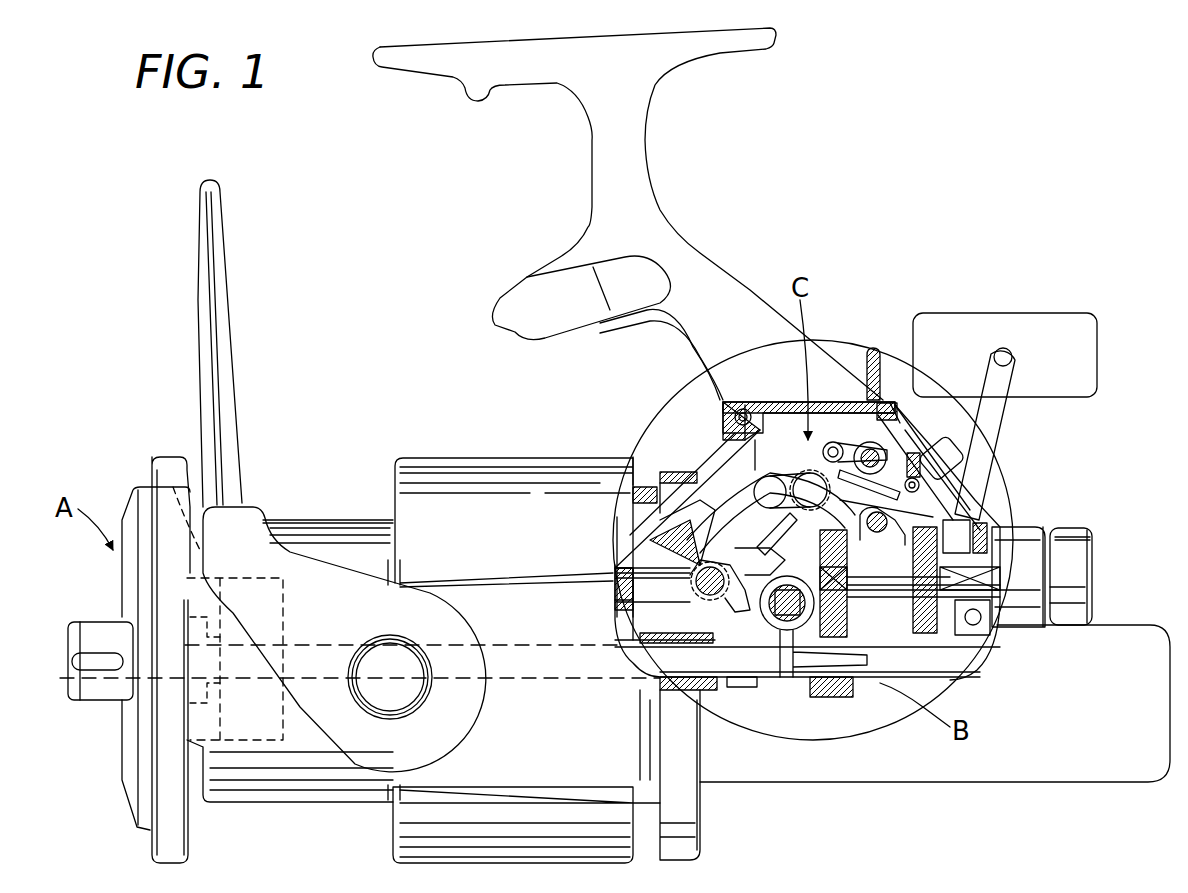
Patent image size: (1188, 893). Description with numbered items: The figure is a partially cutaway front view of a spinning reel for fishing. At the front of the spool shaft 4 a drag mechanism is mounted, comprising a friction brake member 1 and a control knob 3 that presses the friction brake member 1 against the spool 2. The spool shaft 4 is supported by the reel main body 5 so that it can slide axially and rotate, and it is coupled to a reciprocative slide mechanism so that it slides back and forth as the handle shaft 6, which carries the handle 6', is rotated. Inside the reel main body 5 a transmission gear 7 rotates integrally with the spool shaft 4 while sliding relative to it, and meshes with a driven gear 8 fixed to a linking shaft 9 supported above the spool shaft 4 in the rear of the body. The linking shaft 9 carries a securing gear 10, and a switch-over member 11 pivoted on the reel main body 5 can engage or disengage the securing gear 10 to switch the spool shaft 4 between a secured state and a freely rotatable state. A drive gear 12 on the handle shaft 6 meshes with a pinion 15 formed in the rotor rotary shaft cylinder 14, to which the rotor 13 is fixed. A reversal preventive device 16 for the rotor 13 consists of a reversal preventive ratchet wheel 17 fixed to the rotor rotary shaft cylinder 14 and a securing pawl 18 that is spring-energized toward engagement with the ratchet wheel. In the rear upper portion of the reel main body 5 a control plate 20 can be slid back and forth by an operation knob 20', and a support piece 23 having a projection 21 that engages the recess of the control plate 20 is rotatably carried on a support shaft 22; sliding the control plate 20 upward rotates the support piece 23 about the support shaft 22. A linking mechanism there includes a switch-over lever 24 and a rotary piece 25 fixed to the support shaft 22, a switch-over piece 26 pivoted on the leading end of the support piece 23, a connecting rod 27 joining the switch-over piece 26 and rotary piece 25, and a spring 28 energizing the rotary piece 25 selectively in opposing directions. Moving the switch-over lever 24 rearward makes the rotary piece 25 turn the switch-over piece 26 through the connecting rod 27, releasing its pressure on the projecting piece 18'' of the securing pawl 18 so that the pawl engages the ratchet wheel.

The friction brake member 1 is at (230, 605).
The spool 2 is at (343, 537).
The control knob 3 is at (92, 700).
The spool shaft 4 is at (780, 700).
The reel main body 5 is at (1113, 782).
The handle shaft 6 is at (705, 760).
The handle 6' is at (1005, 390).
The transmission gear 7 is at (812, 700).
The driven gear 8 is at (860, 660).
The linking shaft 9 is at (878, 650).
The securing gear 10 is at (983, 670).
The switch-over member 11 is at (968, 516).
The drive gear 12 is at (706, 452).
The rotor 13 is at (693, 840).
The rotor rotary shaft cylinder 14 is at (613, 640).
The pinion 15 is at (630, 580).
The reversal preventive device 16 is at (677, 553).
The reversal preventive ratchet wheel 17 is at (627, 627).
The securing pawl 18 is at (685, 496).
The projecting piece 18'' is at (727, 391).
The control plate 20 is at (977, 462).
The operation knob 20' is at (1013, 480).
The projection 21 is at (893, 407).
The support shaft 22 is at (967, 418).
The support piece 23 is at (857, 437).
The switch-over lever 24 is at (873, 347).
The rotary piece 25 is at (840, 437).
The switch-over piece 26 is at (750, 410).
The connecting rod 27 is at (797, 437).
The spring 28 is at (973, 483).